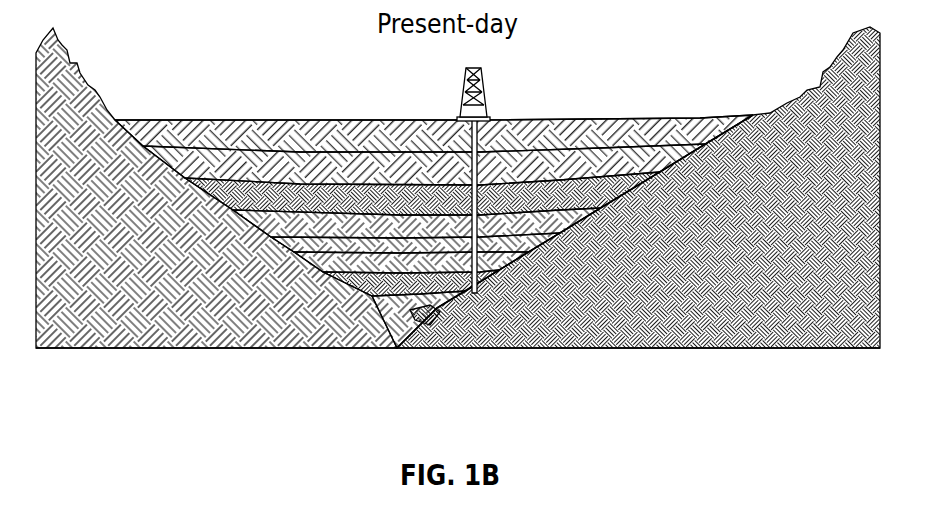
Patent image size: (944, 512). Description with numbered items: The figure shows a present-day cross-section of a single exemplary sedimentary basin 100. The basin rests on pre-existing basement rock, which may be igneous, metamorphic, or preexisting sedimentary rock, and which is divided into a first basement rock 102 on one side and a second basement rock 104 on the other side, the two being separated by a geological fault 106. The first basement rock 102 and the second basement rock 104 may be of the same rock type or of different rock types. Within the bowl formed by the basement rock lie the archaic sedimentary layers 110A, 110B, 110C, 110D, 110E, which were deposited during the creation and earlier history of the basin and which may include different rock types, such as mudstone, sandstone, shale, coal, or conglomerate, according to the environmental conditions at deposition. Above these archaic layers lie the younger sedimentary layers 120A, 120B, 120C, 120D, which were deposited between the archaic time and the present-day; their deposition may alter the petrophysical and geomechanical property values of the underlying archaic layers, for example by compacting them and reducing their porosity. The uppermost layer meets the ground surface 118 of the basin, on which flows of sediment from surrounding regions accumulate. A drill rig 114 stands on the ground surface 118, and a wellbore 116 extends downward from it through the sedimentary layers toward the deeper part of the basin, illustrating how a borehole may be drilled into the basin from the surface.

The sedimentary basin 100 is at (683, 27).
The first basement rock 102 is at (780, 257).
The second basement rock 104 is at (127, 306).
The geological fault 106 is at (505, 278).
The sedimentary layer 110A is at (445, 306).
The sedimentary layer 110B is at (413, 312).
The sedimentary layer 110C is at (372, 287).
The sedimentary layer 110D is at (343, 272).
The sedimentary layer 110E is at (307, 247).
The drill rig 114 is at (487, 98).
The wellbore 116 is at (468, 163).
The ground surface 118 is at (233, 118).
The sedimentary layer 120A is at (277, 227).
The sedimentary layer 120B is at (217, 192).
The sedimentary layer 120C is at (172, 158).
The sedimentary layer 120D is at (140, 124).